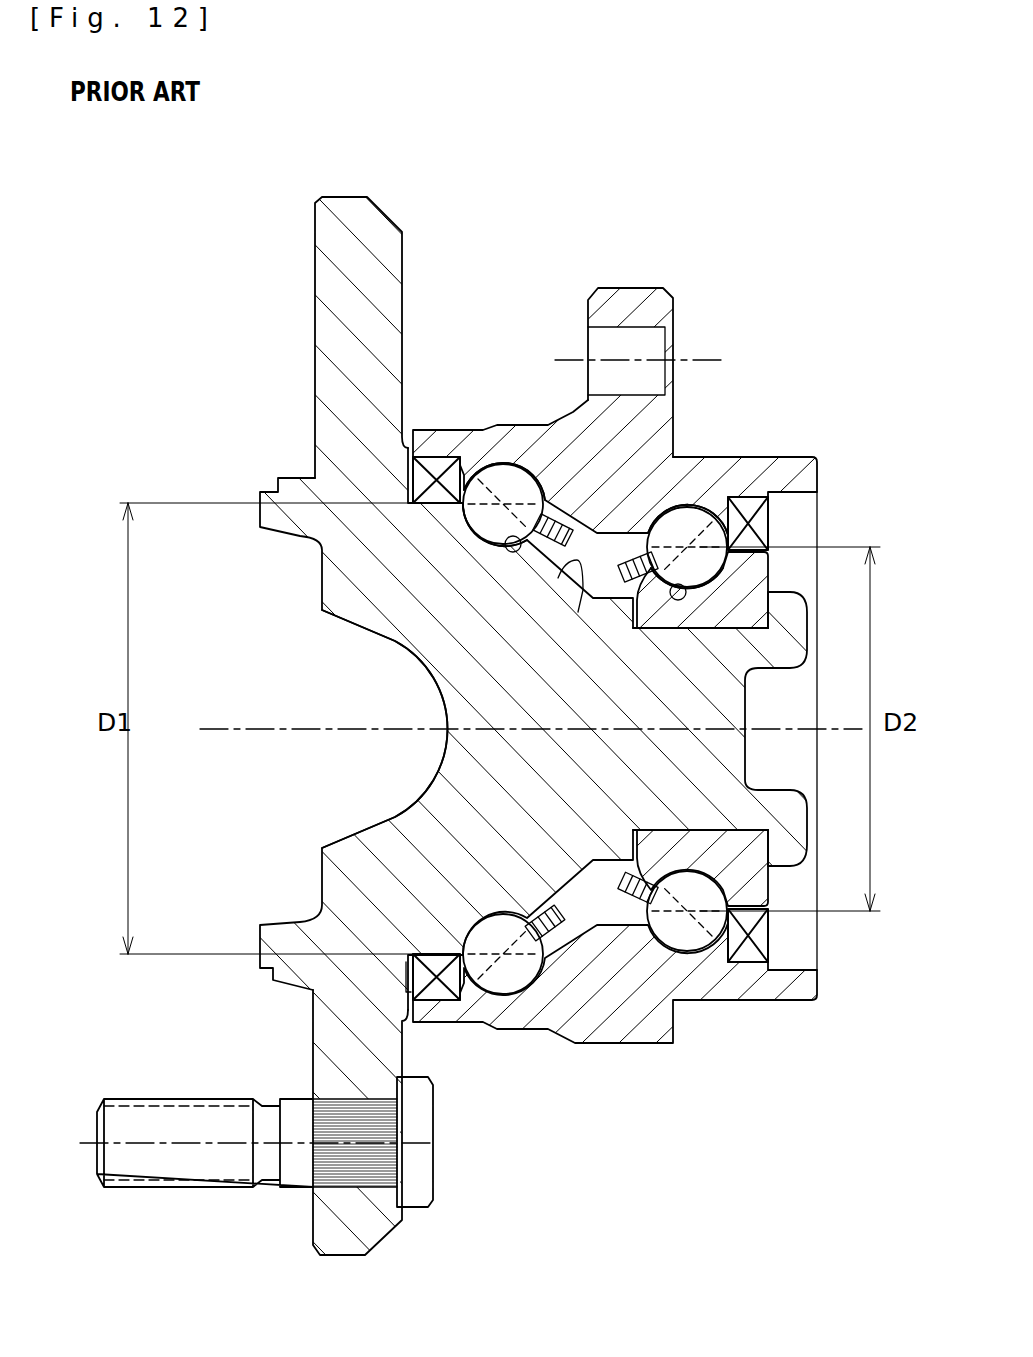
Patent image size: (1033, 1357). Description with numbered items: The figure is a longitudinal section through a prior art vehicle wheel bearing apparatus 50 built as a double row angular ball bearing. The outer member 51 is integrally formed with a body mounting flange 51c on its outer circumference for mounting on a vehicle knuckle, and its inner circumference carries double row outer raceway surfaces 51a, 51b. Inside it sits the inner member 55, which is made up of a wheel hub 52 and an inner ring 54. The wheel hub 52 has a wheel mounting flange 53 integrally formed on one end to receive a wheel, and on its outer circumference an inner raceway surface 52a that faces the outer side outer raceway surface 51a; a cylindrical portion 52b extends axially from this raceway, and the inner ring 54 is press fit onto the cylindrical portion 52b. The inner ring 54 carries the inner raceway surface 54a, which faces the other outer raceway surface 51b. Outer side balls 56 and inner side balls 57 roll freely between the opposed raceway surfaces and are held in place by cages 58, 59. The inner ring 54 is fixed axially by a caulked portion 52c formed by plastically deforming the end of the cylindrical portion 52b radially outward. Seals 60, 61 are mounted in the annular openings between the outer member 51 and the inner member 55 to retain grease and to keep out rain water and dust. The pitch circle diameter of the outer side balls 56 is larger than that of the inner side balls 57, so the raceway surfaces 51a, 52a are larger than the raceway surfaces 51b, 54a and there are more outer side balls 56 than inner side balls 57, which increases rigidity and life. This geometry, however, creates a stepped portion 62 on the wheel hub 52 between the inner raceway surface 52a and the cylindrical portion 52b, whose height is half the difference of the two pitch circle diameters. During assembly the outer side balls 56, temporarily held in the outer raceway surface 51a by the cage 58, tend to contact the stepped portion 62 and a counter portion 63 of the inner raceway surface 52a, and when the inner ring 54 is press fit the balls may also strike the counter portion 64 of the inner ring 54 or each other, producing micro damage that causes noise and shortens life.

The bearing apparatus 50 is at (718, 283).
The outer member 51 is at (572, 430).
The outer raceway surface 51a is at (482, 530).
The outer raceway surface 51b is at (728, 498).
The body mounting flange 51c is at (615, 300).
The wheel hub 52 is at (413, 565).
The inner raceway surface 52a is at (460, 490).
The cylindrical portion 52b is at (683, 630).
The caulked portion 52c is at (787, 622).
The wheel mounting flange 53 is at (346, 232).
The inner ring 54 is at (730, 582).
The inner raceway surface 54a is at (730, 550).
The inner member 55 is at (430, 603).
The outer side balls 56 is at (512, 983).
The inner side balls 57 is at (693, 952).
The cage 58 is at (520, 960).
The cage 59 is at (588, 835).
The seal 60 is at (420, 982).
The seal 61 is at (763, 937).
The stepped portion 62 is at (579, 612).
The counter portion 63 is at (514, 553).
The counter portion 64 is at (676, 601).